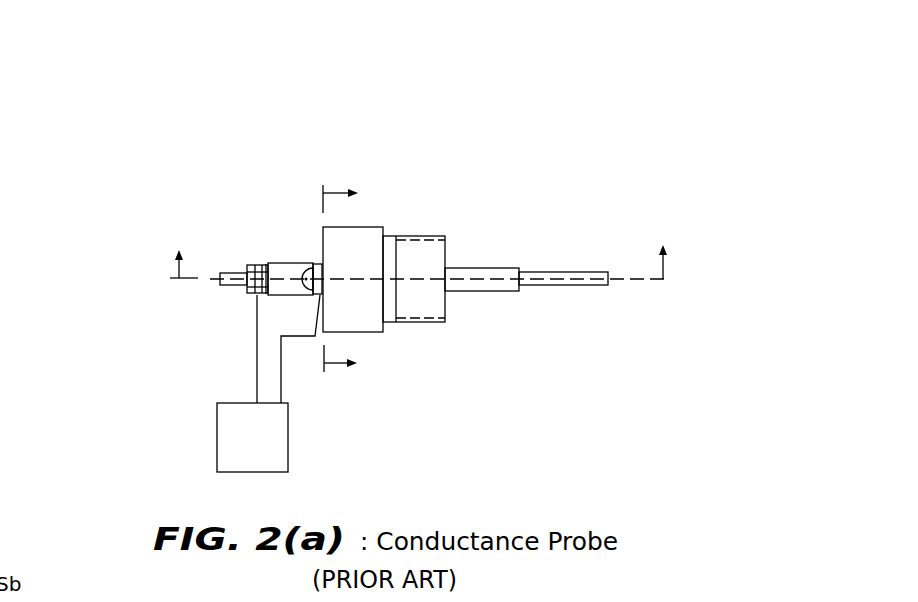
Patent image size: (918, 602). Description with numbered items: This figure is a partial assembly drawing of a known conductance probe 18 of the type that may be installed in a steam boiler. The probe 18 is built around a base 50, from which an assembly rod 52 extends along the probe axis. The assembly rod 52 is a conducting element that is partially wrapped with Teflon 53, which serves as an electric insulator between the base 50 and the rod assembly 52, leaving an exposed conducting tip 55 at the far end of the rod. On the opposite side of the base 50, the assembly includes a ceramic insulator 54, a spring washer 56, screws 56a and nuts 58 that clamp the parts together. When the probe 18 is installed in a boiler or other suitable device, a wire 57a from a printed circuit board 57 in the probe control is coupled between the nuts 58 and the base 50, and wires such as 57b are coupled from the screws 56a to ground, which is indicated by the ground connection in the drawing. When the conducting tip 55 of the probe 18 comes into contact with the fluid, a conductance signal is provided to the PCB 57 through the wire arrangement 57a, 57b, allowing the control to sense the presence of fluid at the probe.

The conductance probe 18 is at (383, 246).
The base 50 is at (372, 227).
The assembly rod 52 is at (542, 262).
The Teflon 53 is at (487, 285).
The ceramic insulator 54 is at (287, 263).
The conducting tip 55 is at (590, 285).
The spring washer 56 is at (263, 263).
The screws 56a is at (307, 267).
The printed circuit board (PCB) 57 is at (288, 452).
The wire 57a is at (257, 357).
The wires 57b is at (281, 387).
The nuts 58 is at (250, 288).